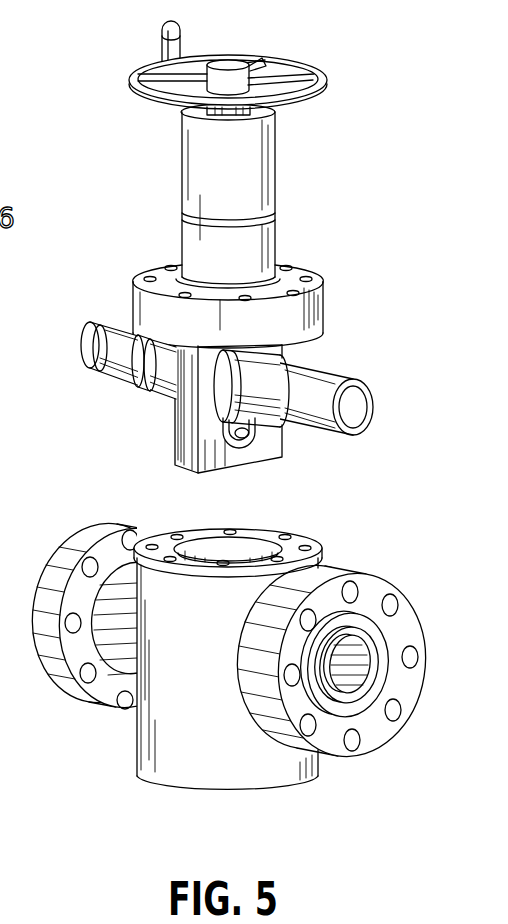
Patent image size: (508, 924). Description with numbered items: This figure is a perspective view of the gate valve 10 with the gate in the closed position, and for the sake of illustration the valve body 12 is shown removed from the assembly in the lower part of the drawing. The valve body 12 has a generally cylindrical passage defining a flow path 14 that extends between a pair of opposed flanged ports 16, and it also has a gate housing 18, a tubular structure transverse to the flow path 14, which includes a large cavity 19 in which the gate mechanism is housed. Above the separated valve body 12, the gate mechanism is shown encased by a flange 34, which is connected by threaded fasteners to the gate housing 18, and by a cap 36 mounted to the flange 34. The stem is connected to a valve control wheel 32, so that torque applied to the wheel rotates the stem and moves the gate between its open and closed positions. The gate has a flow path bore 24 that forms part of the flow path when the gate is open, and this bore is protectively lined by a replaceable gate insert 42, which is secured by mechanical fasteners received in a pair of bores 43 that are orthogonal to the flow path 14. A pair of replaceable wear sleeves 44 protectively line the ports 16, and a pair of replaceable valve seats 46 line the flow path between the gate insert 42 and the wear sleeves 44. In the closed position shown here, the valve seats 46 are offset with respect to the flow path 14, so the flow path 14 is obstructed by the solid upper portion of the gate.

The gate valve 10 is at (115, 200).
The valve body 12 is at (75, 752).
The flow path 14 is at (363, 673).
The flanged ports 16 is at (48, 585).
The gate housing 18 is at (210, 777).
The cavity 19 is at (247, 553).
The flow path bore 24 is at (238, 433).
The valve control wheel 32 is at (300, 68).
The flange 34 is at (315, 298).
The cap 36 is at (255, 147).
The replaceable gate insert 42 is at (242, 436).
The bores 43 is at (185, 423).
The replaceable wear sleeves 44 is at (107, 373).
The replaceable valve seats 46 is at (168, 392).